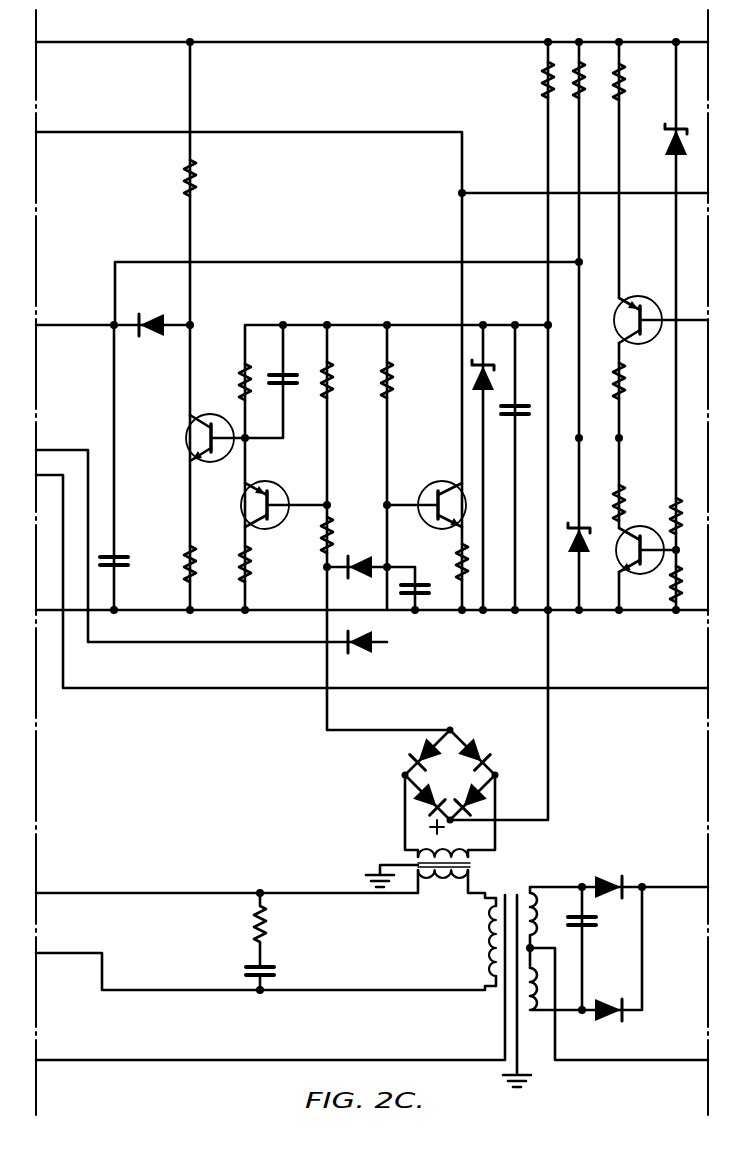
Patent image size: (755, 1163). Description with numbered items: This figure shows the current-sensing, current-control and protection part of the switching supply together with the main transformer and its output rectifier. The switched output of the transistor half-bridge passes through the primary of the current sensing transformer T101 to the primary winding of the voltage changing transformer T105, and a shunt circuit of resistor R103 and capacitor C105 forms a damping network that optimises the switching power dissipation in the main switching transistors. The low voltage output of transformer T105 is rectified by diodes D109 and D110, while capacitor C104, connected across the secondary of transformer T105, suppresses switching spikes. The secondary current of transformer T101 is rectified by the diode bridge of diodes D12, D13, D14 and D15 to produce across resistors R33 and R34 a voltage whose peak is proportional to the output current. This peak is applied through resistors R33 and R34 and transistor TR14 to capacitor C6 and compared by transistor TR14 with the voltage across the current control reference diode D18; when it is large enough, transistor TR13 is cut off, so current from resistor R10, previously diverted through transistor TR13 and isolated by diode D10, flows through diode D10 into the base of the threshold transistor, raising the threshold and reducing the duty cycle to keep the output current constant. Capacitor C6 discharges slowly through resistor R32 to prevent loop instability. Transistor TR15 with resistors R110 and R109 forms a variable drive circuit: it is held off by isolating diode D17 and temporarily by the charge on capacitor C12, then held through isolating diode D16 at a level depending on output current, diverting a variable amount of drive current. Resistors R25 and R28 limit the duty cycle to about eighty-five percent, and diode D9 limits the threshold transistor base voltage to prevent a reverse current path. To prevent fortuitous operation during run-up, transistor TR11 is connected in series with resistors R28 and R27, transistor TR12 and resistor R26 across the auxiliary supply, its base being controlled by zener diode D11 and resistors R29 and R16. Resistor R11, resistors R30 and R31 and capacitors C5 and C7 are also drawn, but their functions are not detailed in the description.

The resistor R10 is at (197, 180).
The resistor R11 is at (545, 82).
The resistor R25 is at (585, 96).
The resistor R26 is at (624, 80).
The zener diode D11 is at (668, 150).
The transistor TR12 is at (662, 292).
The resistor R27 is at (625, 380).
The resistor R28 is at (625, 497).
The resistor R29 is at (676, 520).
The resistor R16 is at (673, 573).
The diode D9 is at (585, 553).
The transistor TR11 is at (622, 572).
The diode D10 is at (150, 336).
The resistor R32 is at (243, 372).
The transistor TR13 is at (226, 404).
The capacitor C6 is at (289, 386).
The resistor R33 is at (334, 388).
The resistor R110 is at (393, 388).
The current control reference diode D18 is at (470, 378).
The capacitor C7 is at (520, 403).
The transistor TR14 is at (279, 490).
The transistor TR15 is at (430, 490).
The resistor R34 is at (325, 541).
The isolating diode D16 is at (358, 558).
The resistor R109 is at (458, 575).
The capacitor C5 is at (120, 557).
The resistor R30 is at (187, 568).
The resistor R31 is at (250, 568).
The capacitor C12 is at (425, 603).
The isolating diode D17 is at (366, 650).
The diode D15 is at (415, 756).
The diode D14 is at (480, 758).
The diode D12 is at (425, 800).
The diode D13 is at (488, 796).
The current sensing transformer T101 is at (410, 857).
The voltage changing transformer T105 is at (508, 888).
The diode D109 is at (608, 878).
The capacitor C104 is at (590, 928).
The diode D110 is at (610, 1022).
The resistor R103 is at (272, 922).
The capacitor C105 is at (278, 968).